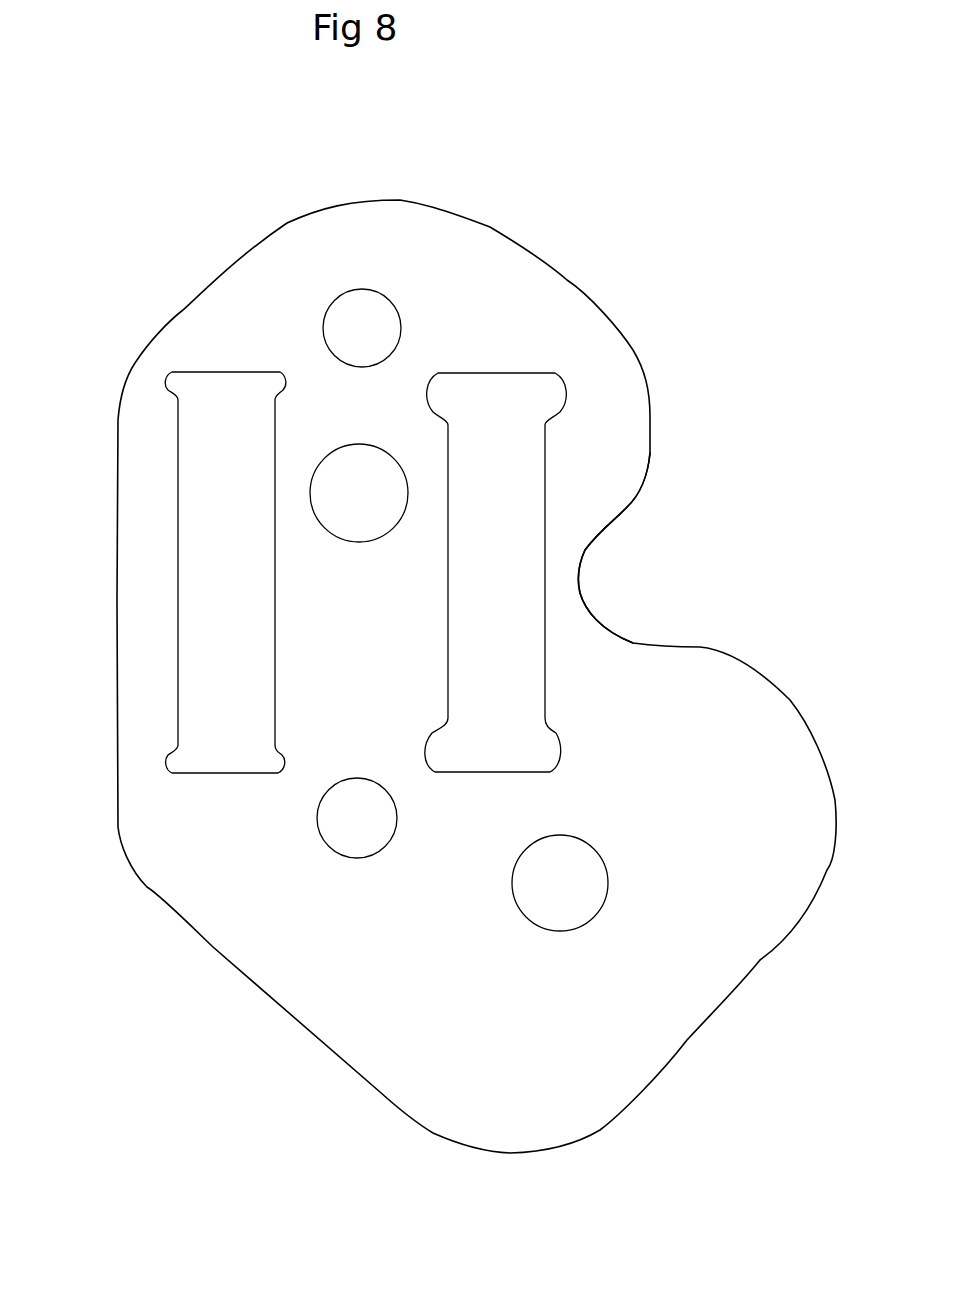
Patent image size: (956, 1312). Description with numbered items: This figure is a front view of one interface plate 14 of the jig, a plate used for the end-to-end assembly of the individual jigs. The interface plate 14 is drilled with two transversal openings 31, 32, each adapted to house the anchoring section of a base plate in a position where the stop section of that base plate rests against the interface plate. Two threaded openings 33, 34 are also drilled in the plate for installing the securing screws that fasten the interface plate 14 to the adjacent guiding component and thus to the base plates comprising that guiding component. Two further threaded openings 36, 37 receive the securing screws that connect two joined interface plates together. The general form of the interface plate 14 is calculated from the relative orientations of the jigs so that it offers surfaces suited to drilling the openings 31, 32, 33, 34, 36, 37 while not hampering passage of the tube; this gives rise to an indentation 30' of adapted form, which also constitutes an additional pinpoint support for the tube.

The interface plate 14 is at (163, 852).
The indentation 30' is at (677, 548).
The transversal opening 31 is at (200, 548).
The transversal opening 32 is at (520, 467).
The threaded opening 33 is at (366, 310).
The threaded opening 34 is at (357, 822).
The threaded opening 36 is at (347, 468).
The threaded opening 37 is at (575, 888).